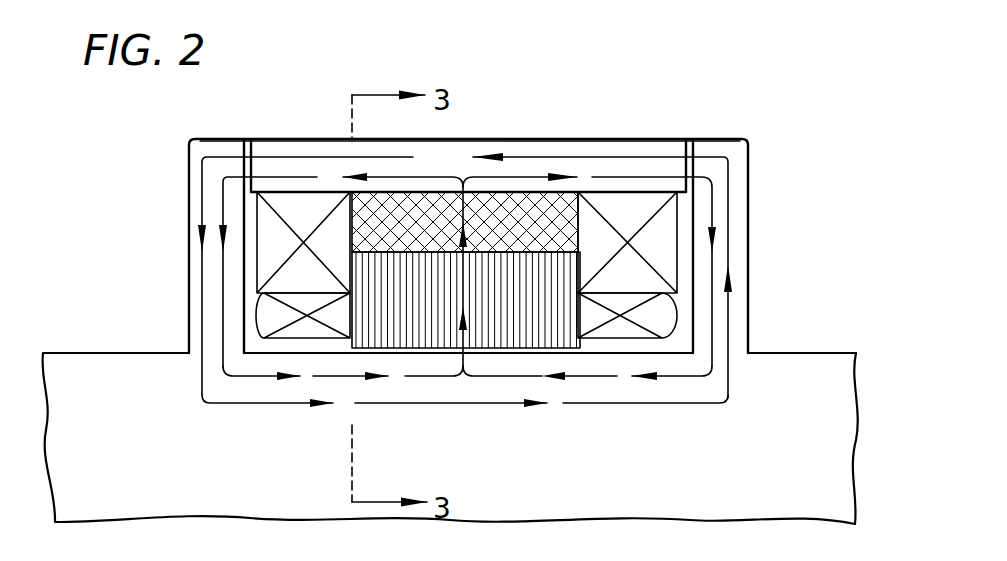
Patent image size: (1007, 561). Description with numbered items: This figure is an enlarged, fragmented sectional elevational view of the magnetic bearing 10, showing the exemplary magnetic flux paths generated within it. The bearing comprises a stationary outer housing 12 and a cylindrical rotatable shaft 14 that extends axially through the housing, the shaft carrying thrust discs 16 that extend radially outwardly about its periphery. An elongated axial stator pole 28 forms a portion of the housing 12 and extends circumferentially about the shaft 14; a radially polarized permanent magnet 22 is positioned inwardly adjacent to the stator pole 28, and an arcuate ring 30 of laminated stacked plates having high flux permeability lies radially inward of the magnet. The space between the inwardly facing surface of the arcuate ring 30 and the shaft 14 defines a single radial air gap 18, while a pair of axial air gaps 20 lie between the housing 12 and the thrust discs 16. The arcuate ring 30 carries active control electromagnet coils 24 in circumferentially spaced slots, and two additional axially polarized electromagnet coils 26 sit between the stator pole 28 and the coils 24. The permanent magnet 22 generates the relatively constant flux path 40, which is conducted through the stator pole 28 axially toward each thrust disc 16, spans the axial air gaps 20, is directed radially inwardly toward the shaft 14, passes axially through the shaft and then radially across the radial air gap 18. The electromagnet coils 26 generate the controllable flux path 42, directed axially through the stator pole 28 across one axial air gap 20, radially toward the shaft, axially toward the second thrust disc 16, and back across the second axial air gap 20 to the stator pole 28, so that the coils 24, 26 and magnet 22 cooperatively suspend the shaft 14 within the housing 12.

The magnetic bearing 10 is at (735, 113).
The housing 12 is at (484, 138).
The shaft 14 is at (822, 353).
The thrust discs 16 is at (188, 172).
The radial air gap 18 is at (505, 350).
The axial air gaps 20 is at (247, 138).
The radially polarized permanent magnet 22 is at (513, 200).
The active control electromagnet coils 24 is at (258, 320).
The electromagnet coils 26 is at (258, 267).
The axial stator pole 28 is at (292, 138).
The arcuate ring 30 is at (567, 335).
The magnetic flux path 40 is at (237, 377).
The magnetic flux path of electromagnet coils 42 is at (268, 405).